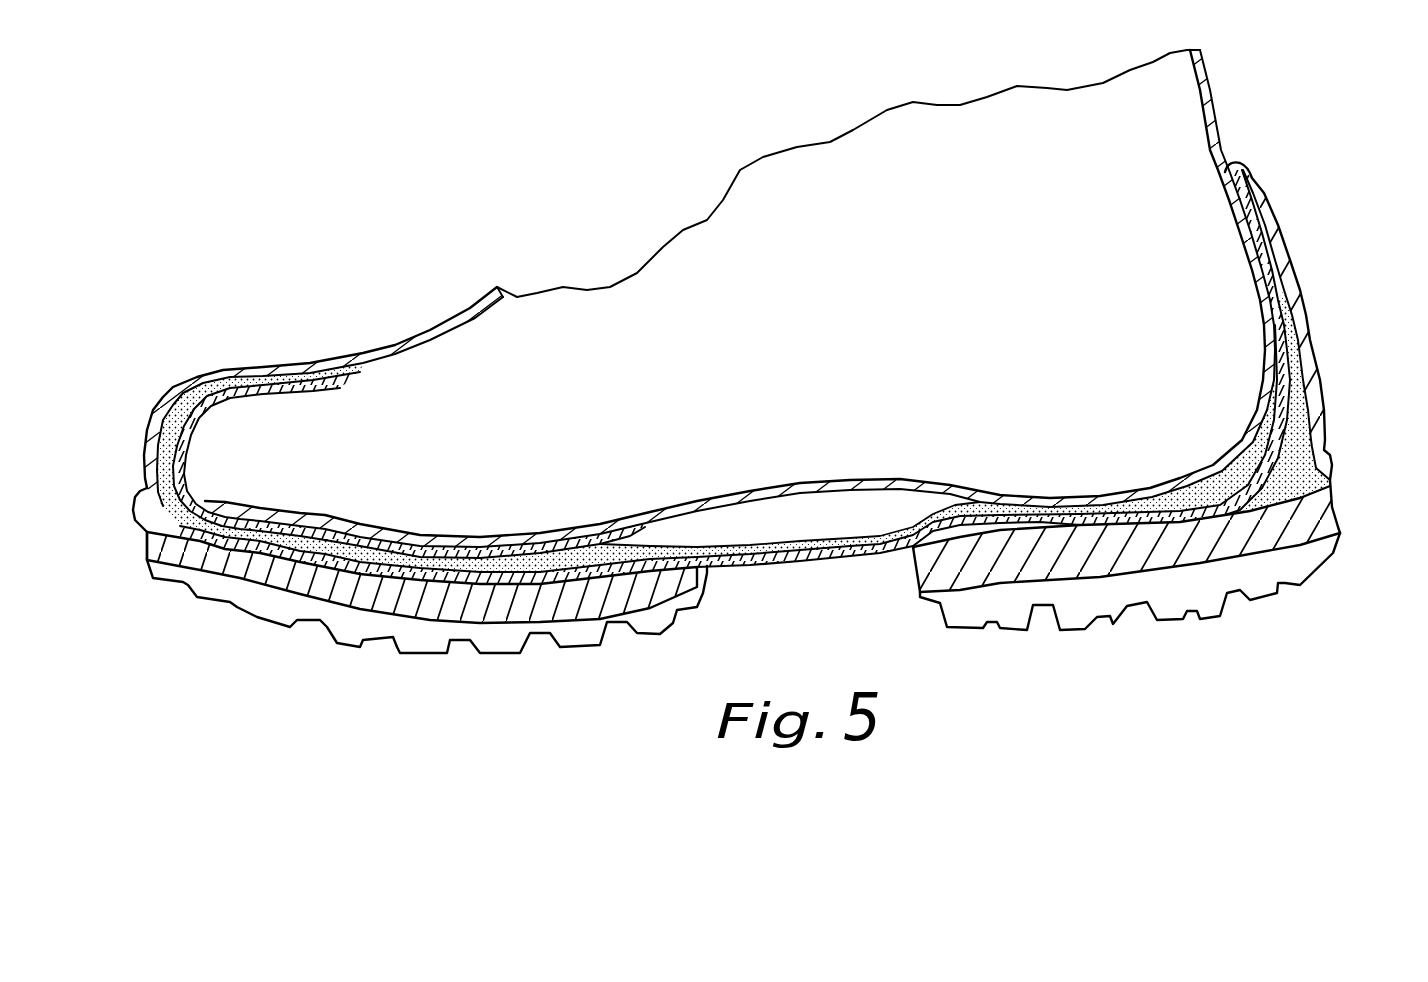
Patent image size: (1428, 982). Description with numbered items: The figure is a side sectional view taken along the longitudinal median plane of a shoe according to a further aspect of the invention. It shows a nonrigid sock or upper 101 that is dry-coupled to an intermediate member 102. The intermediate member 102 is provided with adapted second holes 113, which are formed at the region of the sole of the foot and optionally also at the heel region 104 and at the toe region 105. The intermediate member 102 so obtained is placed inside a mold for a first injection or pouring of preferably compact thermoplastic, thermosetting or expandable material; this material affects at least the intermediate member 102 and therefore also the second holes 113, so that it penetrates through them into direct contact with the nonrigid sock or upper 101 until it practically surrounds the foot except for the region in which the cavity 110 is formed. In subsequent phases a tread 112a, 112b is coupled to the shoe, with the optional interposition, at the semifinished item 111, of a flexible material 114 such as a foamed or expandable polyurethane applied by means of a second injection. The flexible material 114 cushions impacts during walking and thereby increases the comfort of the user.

The nonrigid sock or upper 101 is at (470, 307).
The intermediate member 102 is at (194, 374).
The heel region 104 is at (1292, 195).
The toe region 105 is at (171, 345).
The cavity 110 is at (770, 520).
The semifinished item 111 is at (807, 572).
The tread 112a is at (352, 633).
The tread 112b is at (1113, 620).
The second holes 113 is at (360, 547).
The flexible material 114 is at (647, 580).